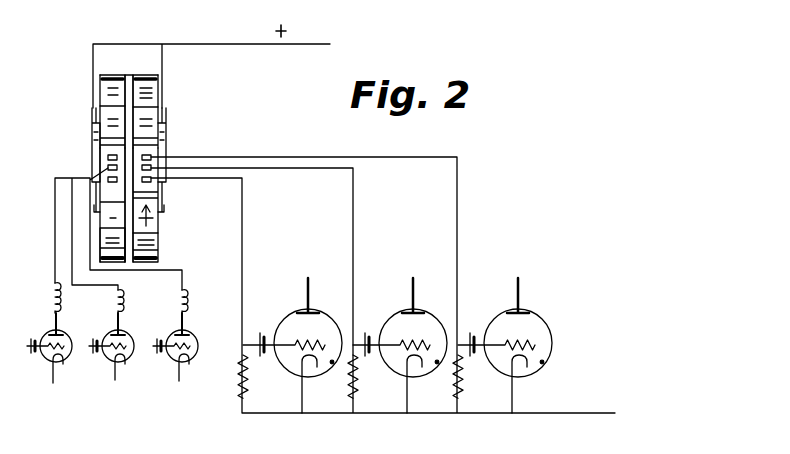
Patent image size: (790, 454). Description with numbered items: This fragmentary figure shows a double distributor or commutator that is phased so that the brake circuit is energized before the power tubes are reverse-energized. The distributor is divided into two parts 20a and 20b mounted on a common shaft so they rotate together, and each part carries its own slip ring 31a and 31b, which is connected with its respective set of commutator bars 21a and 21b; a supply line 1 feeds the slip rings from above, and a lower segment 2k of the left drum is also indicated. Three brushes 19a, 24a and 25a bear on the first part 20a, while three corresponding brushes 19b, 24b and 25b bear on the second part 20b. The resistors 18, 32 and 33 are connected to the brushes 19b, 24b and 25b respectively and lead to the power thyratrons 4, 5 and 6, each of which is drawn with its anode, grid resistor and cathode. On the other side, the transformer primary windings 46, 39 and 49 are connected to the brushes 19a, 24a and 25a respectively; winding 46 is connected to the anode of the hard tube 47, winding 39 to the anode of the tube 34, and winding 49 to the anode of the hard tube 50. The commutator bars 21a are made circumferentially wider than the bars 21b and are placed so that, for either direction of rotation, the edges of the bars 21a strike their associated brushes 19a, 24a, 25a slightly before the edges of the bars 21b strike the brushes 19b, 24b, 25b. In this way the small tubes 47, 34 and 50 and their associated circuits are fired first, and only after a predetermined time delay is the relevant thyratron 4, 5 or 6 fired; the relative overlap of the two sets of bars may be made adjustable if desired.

The positive supply line 1 is at (224, 44).
The drum segment 2k is at (105, 237).
The thyratron 4 is at (329, 318).
The thyratron 5 is at (433, 316).
The thyratron 6 is at (537, 318).
The resistor 18 is at (249, 382).
The brush 19a is at (107, 182).
The brush 19b is at (152, 181).
The distributor part 20a is at (103, 96).
The distributor part 20b is at (148, 96).
The commutator bars 21a is at (108, 146).
The commutator bars 21b is at (153, 145).
The brush 24a is at (107, 170).
The brush 24b is at (152, 169).
The brush 25a is at (108, 157).
The brush 25b is at (153, 157).
The slip ring 31a is at (92, 131).
The slip ring 31b is at (166, 128).
The resistor 32 is at (358, 383).
The resistor 33 is at (463, 383).
The tube 34 is at (128, 358).
The primary winding 39 is at (113, 296).
The primary winding 46 is at (52, 291).
The hard tube 47 is at (66, 358).
The primary winding 49 is at (177, 297).
The hard tube 50 is at (190, 352).